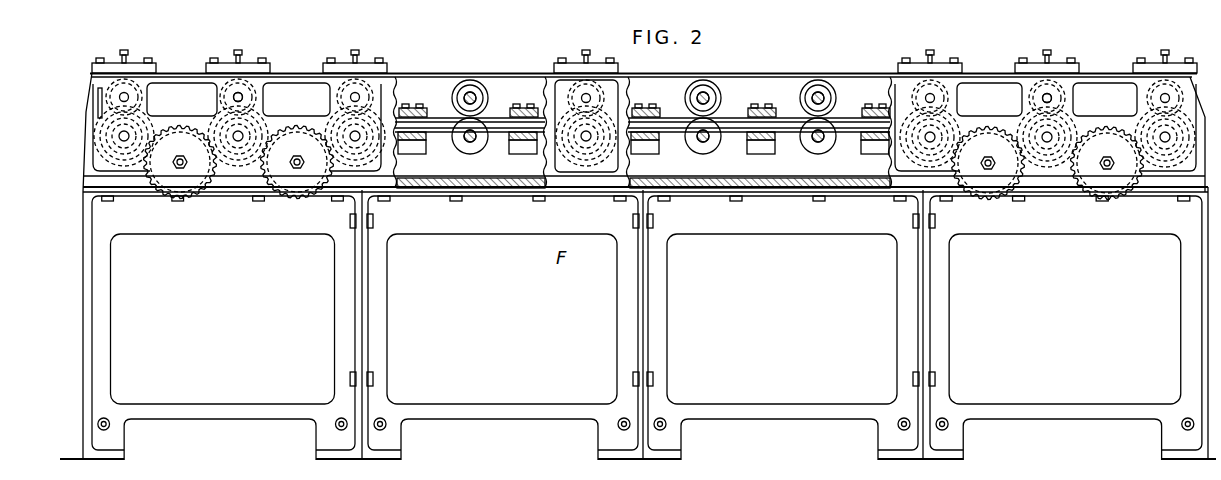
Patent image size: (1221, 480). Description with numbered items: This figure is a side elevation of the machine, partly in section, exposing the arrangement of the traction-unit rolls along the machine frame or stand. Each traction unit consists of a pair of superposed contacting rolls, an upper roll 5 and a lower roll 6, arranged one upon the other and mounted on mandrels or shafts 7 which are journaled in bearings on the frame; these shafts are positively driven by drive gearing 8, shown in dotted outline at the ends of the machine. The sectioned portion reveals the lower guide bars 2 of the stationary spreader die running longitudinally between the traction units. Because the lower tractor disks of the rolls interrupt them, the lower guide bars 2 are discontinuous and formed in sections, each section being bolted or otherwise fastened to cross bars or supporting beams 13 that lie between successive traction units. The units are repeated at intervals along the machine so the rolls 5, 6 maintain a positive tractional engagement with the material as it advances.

The lower guide bars 2 is at (500, 122).
The upper roll 5 is at (148, 97).
The lower roll 6 is at (160, 121).
The mandrels or shafts 7 is at (241, 95).
The drive gearing 8 is at (284, 139).
The cross bars or supporting beams 13 is at (410, 99).